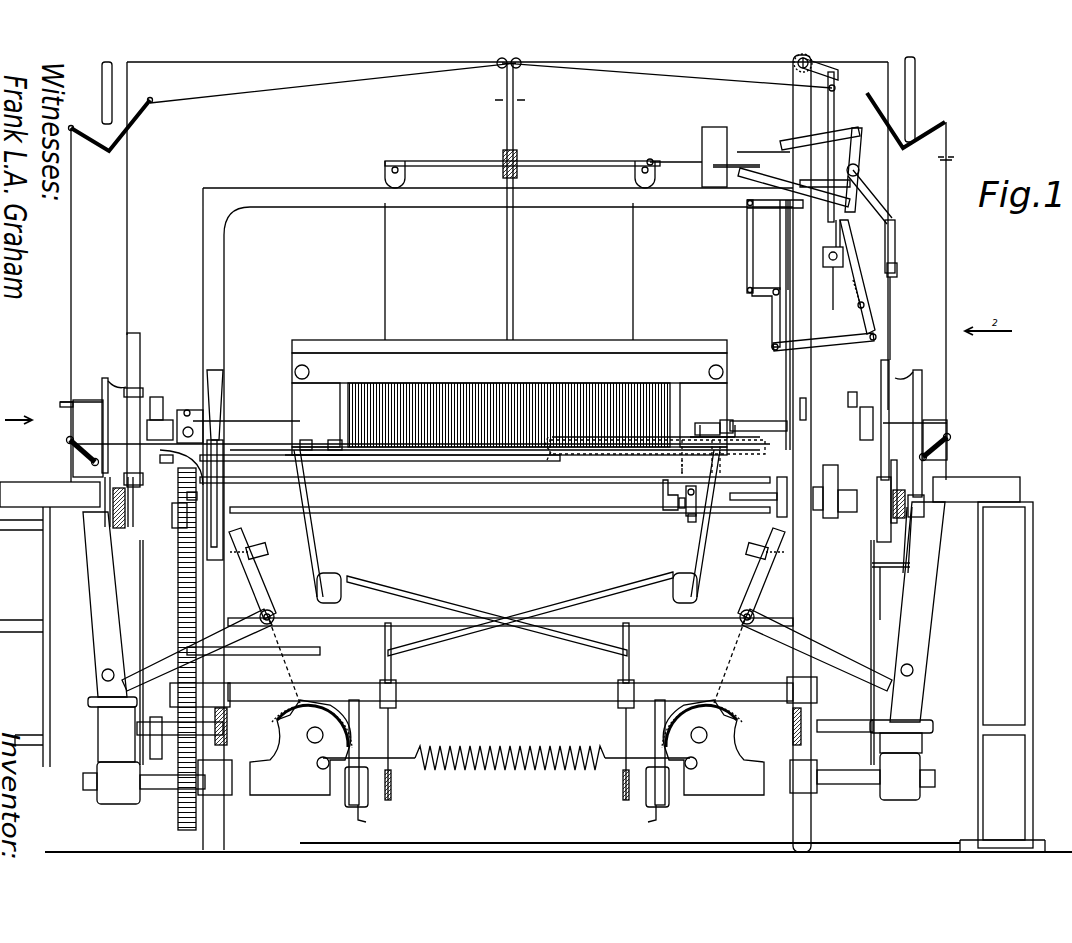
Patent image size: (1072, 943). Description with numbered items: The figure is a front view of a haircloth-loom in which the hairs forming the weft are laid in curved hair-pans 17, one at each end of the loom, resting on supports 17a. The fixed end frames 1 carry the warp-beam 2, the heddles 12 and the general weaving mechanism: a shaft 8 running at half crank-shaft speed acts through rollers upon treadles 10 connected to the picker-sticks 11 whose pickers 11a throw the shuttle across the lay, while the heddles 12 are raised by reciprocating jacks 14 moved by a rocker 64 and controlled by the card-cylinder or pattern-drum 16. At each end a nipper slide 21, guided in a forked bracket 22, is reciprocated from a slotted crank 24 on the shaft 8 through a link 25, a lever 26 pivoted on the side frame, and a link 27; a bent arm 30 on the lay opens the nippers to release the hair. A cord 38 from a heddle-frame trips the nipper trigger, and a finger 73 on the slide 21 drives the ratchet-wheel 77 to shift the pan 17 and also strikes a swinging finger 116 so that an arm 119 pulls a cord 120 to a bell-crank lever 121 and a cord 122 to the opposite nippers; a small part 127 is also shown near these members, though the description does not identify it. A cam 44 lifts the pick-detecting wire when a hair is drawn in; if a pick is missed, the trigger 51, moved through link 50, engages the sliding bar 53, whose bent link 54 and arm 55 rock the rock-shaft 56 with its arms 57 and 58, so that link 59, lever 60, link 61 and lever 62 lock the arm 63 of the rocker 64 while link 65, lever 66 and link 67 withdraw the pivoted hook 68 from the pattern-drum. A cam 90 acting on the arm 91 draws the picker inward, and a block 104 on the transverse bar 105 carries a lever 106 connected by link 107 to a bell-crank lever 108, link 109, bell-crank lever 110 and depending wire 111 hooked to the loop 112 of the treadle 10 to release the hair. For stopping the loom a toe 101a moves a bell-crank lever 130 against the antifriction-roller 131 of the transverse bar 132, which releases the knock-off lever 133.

The fixed end frame 1 is at (536, 453).
The warp-beam 2 is at (506, 516).
The shaft 8 is at (510, 692).
The treadle 10 is at (354, 806).
The picker-stick 11 is at (514, 612).
The picker 11a is at (74, 440).
The heddle 12 is at (555, 342).
The reciprocating jack 14 is at (702, 148).
The card-cylinder or pattern-drum 16 is at (835, 267).
The hair-pan 17 is at (510, 492).
The hair-trough support 17a is at (1002, 677).
The slide 21 is at (140, 371).
The forked bracket 22 is at (158, 758).
The slotted crank 24 is at (862, 632).
The link 25 is at (142, 790).
The lever 26 is at (933, 728).
The link 27 is at (470, 462).
The bent arm 30 is at (905, 366).
The cord or wire 38 is at (506, 145).
The cam 44 is at (852, 392).
The link 50 is at (682, 467).
The trigger 51 is at (663, 494).
The bar 53 is at (680, 508).
The bent link 54 is at (693, 485).
The arm 55 is at (690, 522).
The rock-shaft 56 is at (508, 513).
The arm 57 is at (777, 492).
The arm 58 is at (175, 514).
The link 59 is at (800, 138).
The lever 60 is at (786, 400).
The link 61 is at (780, 260).
The lever 62 is at (770, 180).
The arm 63 is at (870, 210).
The rocker 64 is at (856, 152).
The link 65 is at (747, 268).
The lever 66 is at (772, 316).
The link 67 is at (855, 340).
The pivoted hook 68 is at (852, 275).
The finger 73 is at (908, 566).
The ratchet-wheel 77 is at (905, 512).
The cam 90 is at (507, 548).
The arm 91 is at (262, 580).
The toe 101a is at (733, 423).
The block 104 is at (340, 437).
The transverse bar 105 is at (355, 457).
The lever 106 is at (306, 440).
The link 107 is at (509, 523).
The bell-crank lever 108 is at (332, 603).
The link 109 is at (512, 622).
The bell-crank lever 110 is at (391, 637).
The depending wire 111 is at (385, 667).
The loop 112 is at (372, 808).
The swinging finger 116 is at (926, 497).
The arm 119 is at (508, 452).
The cord or wire 120 is at (71, 360).
The bell-crank lever 121 is at (507, 131).
The cord or wire 122 is at (492, 80).
The pin 127 is at (803, 403).
The bell-crank lever 130 is at (703, 425).
The antifriction-roller 131 is at (700, 433).
The bar 132 is at (583, 452).
The knock-off lever 133 is at (212, 393).